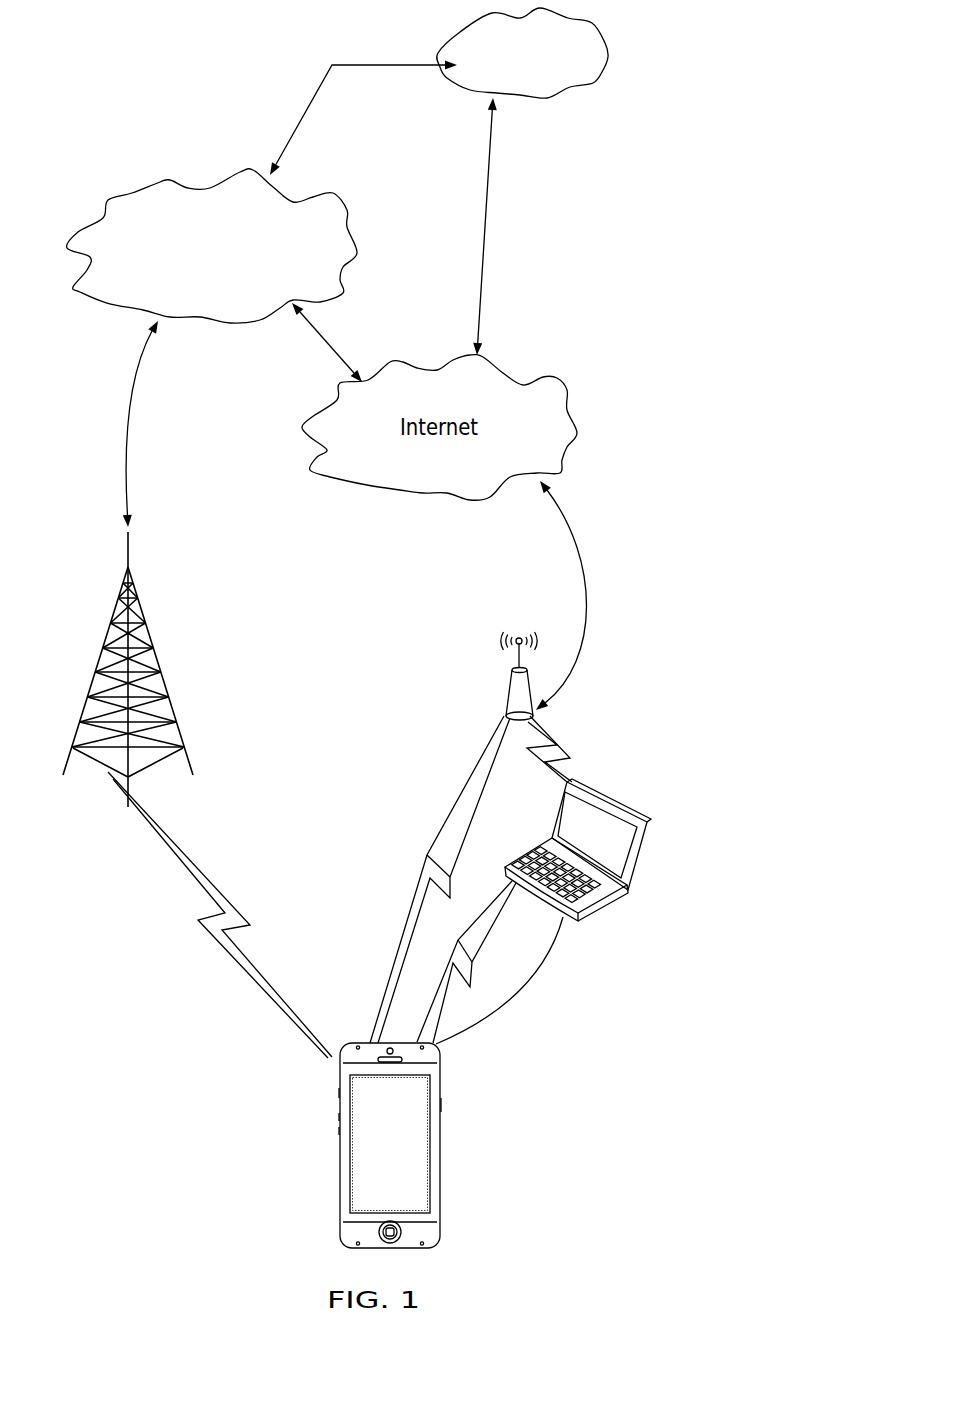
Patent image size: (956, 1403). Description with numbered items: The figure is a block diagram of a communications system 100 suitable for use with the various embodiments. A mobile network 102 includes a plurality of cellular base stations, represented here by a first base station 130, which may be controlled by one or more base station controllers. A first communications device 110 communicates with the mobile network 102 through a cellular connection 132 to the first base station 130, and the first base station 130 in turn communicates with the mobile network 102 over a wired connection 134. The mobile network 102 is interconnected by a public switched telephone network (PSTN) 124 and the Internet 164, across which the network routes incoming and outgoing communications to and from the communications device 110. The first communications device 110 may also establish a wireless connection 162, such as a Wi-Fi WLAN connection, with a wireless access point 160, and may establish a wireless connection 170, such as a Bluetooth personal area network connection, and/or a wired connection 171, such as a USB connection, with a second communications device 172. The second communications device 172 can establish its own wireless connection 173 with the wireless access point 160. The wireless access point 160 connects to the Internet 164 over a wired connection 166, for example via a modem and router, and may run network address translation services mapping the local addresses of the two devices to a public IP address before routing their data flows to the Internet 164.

The communications system 100 is at (165, 83).
The mobile network 102 is at (255, 326).
The first communications device 110 is at (338, 1173).
The public switched telephone network (PSTN) 124 is at (537, 100).
The first base station 130 is at (130, 560).
The cellular connection 132 is at (198, 868).
The wired connection 134 is at (131, 381).
The wireless access point 160 is at (506, 690).
The wireless connection 162 is at (470, 810).
The Internet 164 is at (410, 362).
The wired connection 166 is at (573, 538).
The wireless connection 170 is at (488, 931).
The wired connection 171 is at (525, 972).
The second communications device 172 is at (590, 788).
The wireless connection 173 is at (573, 760).